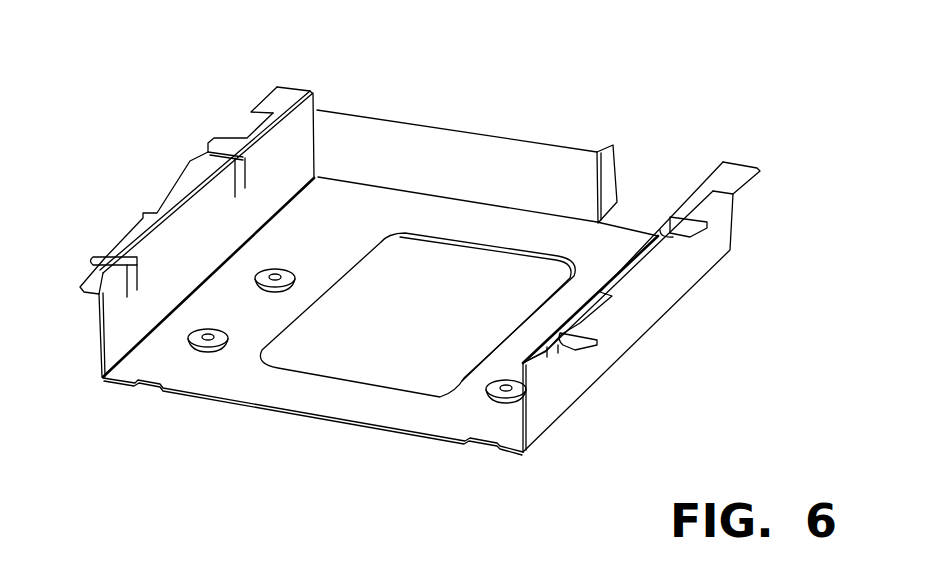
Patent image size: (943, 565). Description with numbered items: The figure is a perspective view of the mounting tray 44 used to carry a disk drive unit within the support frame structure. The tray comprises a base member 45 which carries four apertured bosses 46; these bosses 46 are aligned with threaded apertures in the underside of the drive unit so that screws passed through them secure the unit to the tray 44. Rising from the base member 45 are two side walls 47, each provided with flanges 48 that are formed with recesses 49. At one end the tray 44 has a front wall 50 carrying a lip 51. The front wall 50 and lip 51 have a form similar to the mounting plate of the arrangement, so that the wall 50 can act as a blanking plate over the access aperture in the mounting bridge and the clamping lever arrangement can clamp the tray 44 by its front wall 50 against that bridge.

The mounting tray 44 is at (588, 83).
The base member 45 is at (338, 412).
The apertured bosses 46 is at (285, 288).
The side walls 47 is at (113, 322).
The flanges 48 is at (170, 182).
The recesses 49 is at (237, 127).
The front wall 50 is at (428, 137).
The lip 51 is at (612, 168).